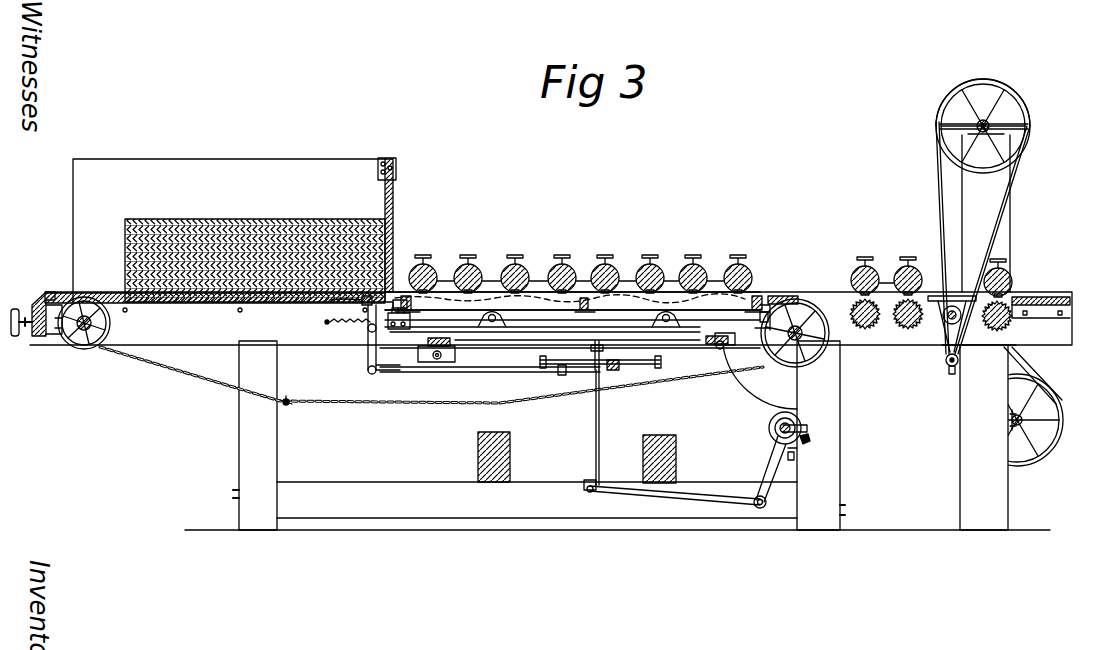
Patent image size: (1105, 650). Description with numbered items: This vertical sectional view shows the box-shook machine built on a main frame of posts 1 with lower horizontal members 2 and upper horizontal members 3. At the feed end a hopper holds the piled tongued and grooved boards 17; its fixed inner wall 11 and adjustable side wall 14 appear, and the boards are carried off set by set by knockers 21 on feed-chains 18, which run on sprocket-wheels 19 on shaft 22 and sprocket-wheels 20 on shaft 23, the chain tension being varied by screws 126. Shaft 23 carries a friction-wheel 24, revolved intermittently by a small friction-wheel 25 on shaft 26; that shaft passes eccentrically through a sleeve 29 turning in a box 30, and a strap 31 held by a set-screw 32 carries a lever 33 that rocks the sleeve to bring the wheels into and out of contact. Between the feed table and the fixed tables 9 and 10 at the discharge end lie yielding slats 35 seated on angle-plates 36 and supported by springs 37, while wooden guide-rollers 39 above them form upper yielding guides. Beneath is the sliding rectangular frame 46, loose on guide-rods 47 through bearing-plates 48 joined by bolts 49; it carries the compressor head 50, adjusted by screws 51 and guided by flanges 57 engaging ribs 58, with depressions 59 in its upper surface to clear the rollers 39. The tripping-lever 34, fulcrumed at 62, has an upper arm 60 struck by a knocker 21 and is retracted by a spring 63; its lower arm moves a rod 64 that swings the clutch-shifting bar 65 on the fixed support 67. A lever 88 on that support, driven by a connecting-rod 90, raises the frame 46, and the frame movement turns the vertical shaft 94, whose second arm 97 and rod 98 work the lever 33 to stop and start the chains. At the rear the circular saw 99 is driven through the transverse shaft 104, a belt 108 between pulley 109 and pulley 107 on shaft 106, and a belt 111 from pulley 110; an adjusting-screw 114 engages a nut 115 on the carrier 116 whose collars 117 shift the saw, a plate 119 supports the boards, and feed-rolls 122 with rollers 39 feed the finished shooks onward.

The posts 1 is at (239, 448).
The lower horizontal members 2 is at (490, 510).
The upper horizontal members 3 is at (204, 333).
The fixed table 9 is at (835, 292).
The fixed table 10 is at (1040, 297).
The inner wall 11 is at (396, 176).
The adjustable side wall 14 is at (176, 160).
The tongued and grooved boards 17 is at (246, 218).
The feed-chains 18 is at (175, 380).
The sprocket-wheels 19 is at (105, 347).
The sprocket-wheels 20 is at (795, 326).
The knockers 21 is at (286, 405).
The shaft 22 is at (80, 349).
The shaft 23 is at (802, 296).
The friction-wheel 24 is at (806, 300).
The small friction-wheel 25 is at (768, 428).
The shaft 26 is at (775, 435).
The sleeve 29 is at (800, 428).
The box 30 is at (796, 456).
The strap 31 is at (782, 460).
The set-screw 32 is at (806, 441).
The lever 33 is at (766, 508).
The tripping-lever 34 is at (371, 372).
The yielding slats 35 is at (440, 292).
The angle-plates 36 is at (405, 295).
The springs 37 is at (398, 300).
The guide-rollers 39 is at (652, 262).
The rectangular frame 46 is at (706, 342).
The guide-rods 47 is at (433, 358).
The bearing-plates 48 is at (420, 340).
The bolts 49 is at (432, 348).
The compressor head 50 is at (625, 305).
The screws 51 is at (491, 316).
The flanges 57 is at (398, 330).
The ribs 58 is at (790, 372).
The depressions 59 is at (536, 318).
The upper arm 60 is at (362, 305).
The fulcrum 62 is at (366, 333).
The spring 63 is at (325, 323).
The rod 64 is at (450, 365).
The bar 65 is at (620, 375).
The fixed support 67 is at (618, 372).
The lever 88 is at (575, 373).
The connecting-rod 90 is at (545, 366).
The vertical shaft 94 is at (594, 452).
The second arm 97 is at (584, 486).
The rod 98 is at (667, 505).
The circular saw 99 is at (948, 322).
The transverse shaft 104 is at (1010, 422).
The shaft 106 is at (985, 118).
The pulley 107 is at (975, 125).
The belt 108 is at (1040, 368).
The pulley 109 is at (1024, 358).
The pulley 110 is at (1018, 170).
The belt 111 is at (1010, 208).
The adjusting-screw 114 is at (955, 372).
The nut 115 is at (946, 366).
The carrier 116 is at (958, 360).
The collars 117 is at (944, 322).
The plate 119 is at (940, 290).
The feed-rolls 122 is at (878, 330).
The screws 126 is at (20, 338).